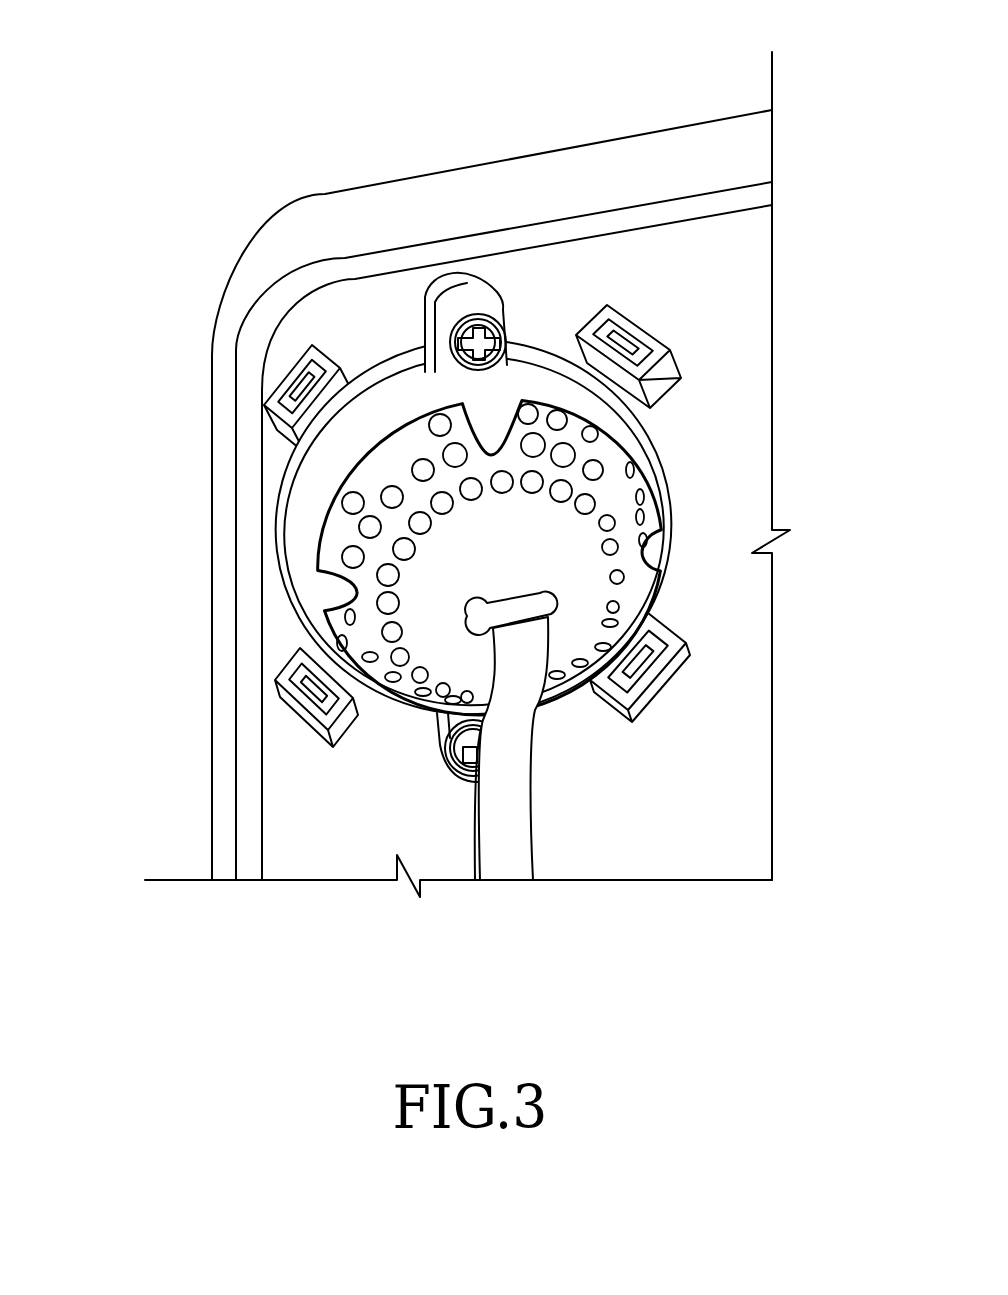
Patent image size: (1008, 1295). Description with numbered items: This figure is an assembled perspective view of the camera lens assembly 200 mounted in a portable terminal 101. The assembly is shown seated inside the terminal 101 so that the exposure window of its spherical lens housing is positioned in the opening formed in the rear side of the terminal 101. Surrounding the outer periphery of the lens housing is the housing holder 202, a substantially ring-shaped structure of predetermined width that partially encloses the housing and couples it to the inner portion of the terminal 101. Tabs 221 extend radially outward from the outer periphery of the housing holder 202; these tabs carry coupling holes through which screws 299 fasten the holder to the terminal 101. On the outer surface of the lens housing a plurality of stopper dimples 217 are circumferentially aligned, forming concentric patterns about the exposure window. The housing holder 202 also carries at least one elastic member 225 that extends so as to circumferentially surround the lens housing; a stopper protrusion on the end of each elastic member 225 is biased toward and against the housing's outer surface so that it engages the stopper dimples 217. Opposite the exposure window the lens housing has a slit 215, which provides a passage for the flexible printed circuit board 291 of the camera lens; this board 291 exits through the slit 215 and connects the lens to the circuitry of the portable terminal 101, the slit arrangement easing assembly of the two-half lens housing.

The portable terminal 101 is at (659, 160).
The camera lens assembly 200 is at (464, 517).
The housing holder 202 is at (660, 488).
The slit 215 is at (560, 598).
The stopper dimples 217 is at (421, 466).
The tabs 221 is at (472, 334).
The elastic member 225 is at (337, 593).
The flexible printed circuit board 291 is at (520, 822).
The screws 299 is at (483, 338).